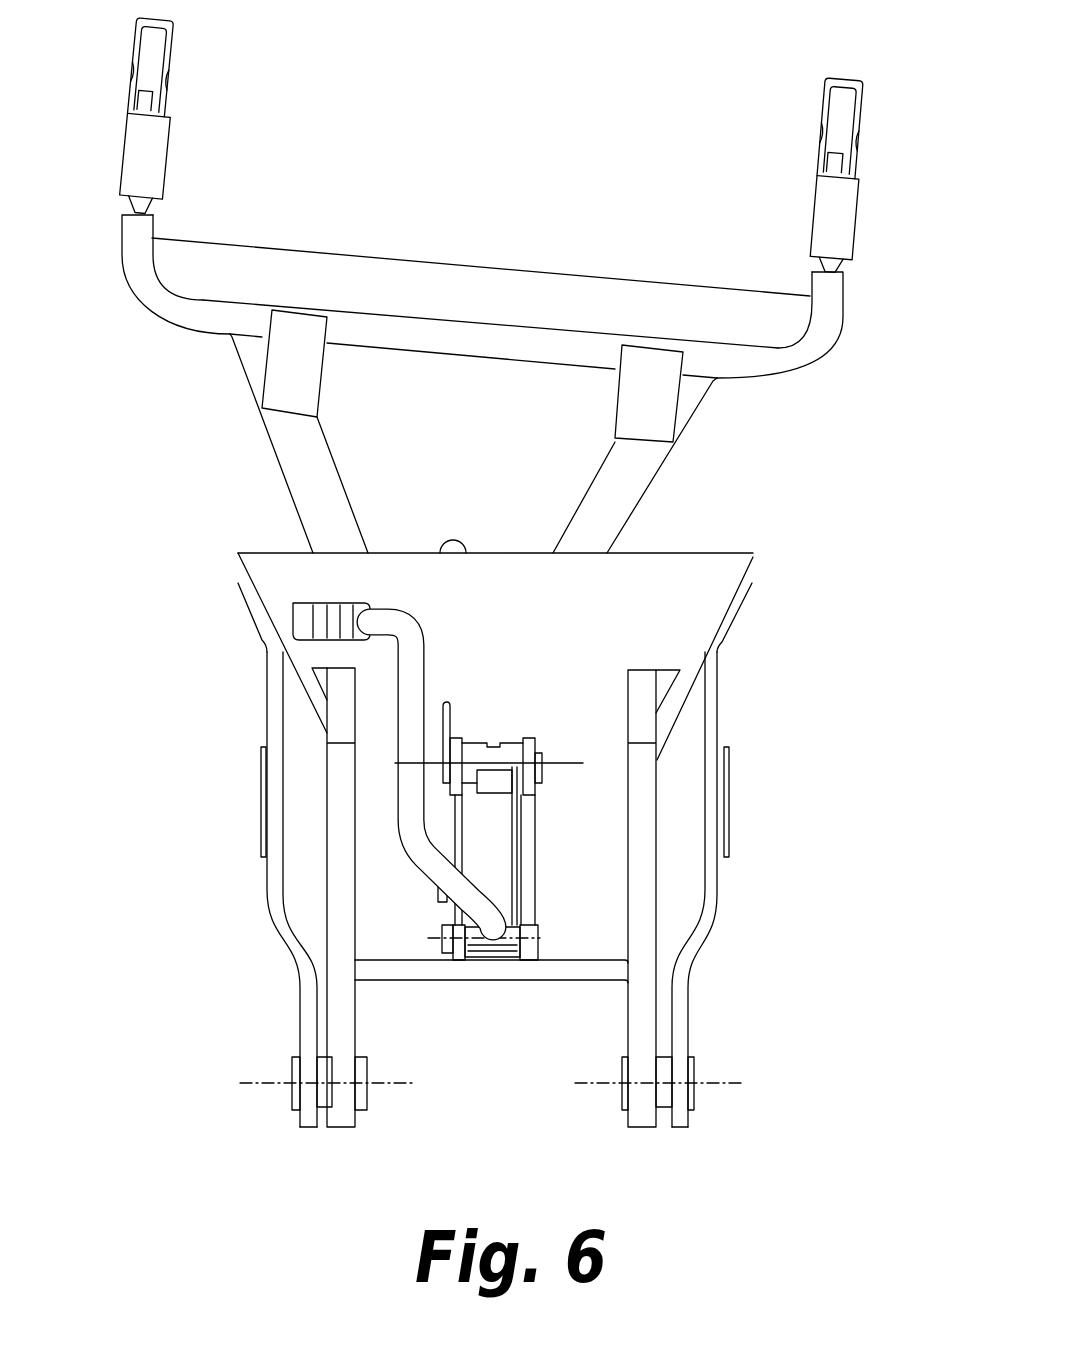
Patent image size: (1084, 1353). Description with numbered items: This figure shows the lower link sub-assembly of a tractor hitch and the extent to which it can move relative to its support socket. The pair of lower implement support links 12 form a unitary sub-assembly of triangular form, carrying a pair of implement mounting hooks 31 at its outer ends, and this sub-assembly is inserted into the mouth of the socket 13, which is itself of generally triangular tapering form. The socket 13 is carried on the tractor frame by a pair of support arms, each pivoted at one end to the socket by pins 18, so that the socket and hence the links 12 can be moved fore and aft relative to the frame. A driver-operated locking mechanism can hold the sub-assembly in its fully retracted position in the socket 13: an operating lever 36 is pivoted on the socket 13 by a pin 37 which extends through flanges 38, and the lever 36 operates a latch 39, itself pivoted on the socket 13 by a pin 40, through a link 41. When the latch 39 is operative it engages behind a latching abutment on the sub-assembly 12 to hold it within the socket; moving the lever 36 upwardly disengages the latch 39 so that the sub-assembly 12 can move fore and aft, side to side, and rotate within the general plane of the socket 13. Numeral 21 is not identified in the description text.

The lower implement support links 12 is at (505, 285).
The implement mounting hooks 31 is at (153, 157).
The socket 13 is at (647, 610).
The leg 21 is at (292, 848).
The pins 18 is at (263, 1083).
The operating lever 36 is at (403, 740).
The pin 37 is at (540, 938).
The flanges 38 is at (527, 960).
The latch 39 is at (490, 827).
The pin 40 is at (553, 753).
The link 41 is at (520, 863).